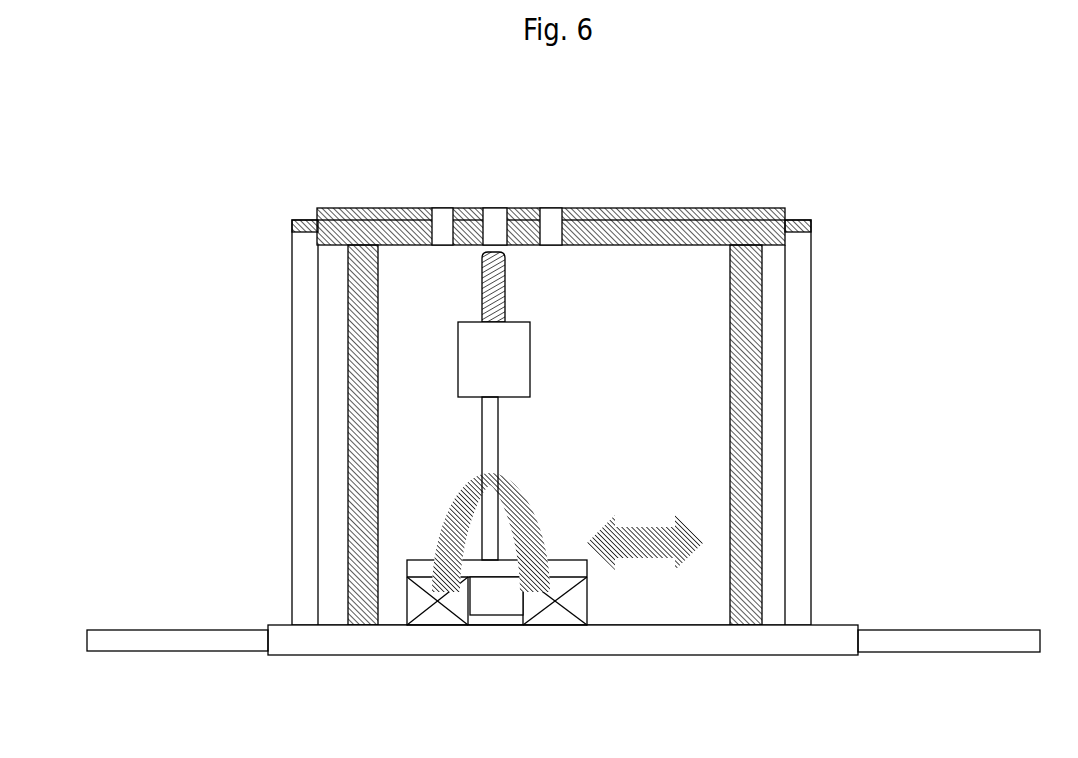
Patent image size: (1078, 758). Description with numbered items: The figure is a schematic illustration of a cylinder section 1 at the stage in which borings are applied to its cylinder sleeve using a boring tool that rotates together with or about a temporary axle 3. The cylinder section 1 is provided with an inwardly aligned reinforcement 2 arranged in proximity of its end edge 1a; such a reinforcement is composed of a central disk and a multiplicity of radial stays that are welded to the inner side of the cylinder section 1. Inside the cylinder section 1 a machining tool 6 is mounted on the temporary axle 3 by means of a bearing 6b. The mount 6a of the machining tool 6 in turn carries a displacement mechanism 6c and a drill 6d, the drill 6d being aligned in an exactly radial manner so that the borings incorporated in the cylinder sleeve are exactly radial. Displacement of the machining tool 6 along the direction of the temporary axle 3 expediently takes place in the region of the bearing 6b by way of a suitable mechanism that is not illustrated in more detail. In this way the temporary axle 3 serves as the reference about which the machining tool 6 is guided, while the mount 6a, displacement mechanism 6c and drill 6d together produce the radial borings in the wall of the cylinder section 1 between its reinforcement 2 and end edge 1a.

The cylinder section 1 is at (768, 208).
The end edge 1a is at (660, 210).
The reinforcement 2 is at (730, 320).
The temporary axle 3 is at (395, 645).
The machining tool 6 is at (550, 438).
The mount 6a is at (485, 430).
The bearing 6b is at (590, 602).
The displacement mechanism 6c is at (483, 349).
The drill 6d is at (480, 282).